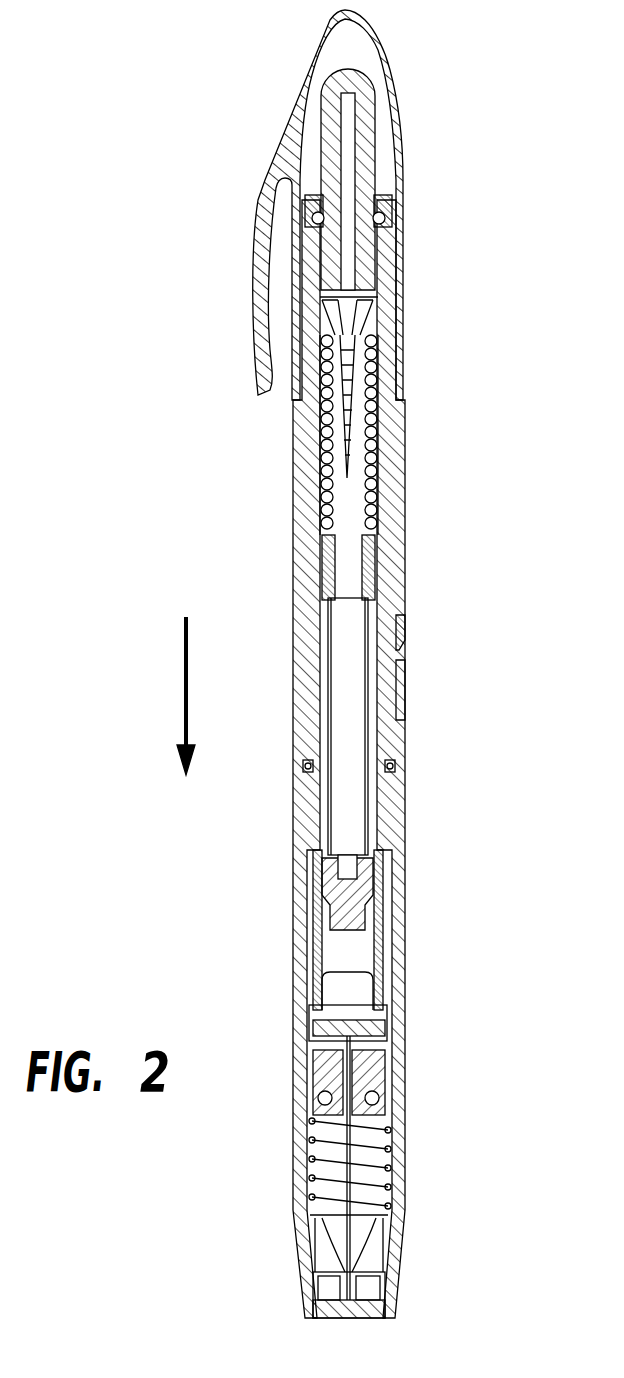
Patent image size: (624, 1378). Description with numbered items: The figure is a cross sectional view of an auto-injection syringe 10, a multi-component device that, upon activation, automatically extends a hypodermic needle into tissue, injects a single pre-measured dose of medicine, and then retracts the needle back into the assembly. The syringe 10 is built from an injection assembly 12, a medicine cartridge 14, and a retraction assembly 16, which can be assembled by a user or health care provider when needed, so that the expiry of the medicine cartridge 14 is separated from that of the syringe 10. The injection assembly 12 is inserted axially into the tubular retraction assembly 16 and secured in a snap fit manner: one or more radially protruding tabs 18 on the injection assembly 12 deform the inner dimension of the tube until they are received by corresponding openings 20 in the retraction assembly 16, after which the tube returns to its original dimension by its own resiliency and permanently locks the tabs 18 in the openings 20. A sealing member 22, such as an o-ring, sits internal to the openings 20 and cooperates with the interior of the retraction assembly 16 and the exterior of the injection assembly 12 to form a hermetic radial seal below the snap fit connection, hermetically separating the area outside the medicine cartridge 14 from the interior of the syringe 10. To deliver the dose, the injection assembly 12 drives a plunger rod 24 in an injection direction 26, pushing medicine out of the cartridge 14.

The auto-injection syringe 10 is at (167, 395).
The injection assembly 12 is at (412, 409).
The medicine cartridge 14 is at (323, 941).
The retraction assembly 16 is at (288, 1191).
The radially protruding tabs 18 is at (400, 655).
The openings 20 is at (401, 675).
The sealing member 22 is at (305, 768).
The plunger rod 24 is at (345, 700).
The injection direction 26 is at (184, 681).